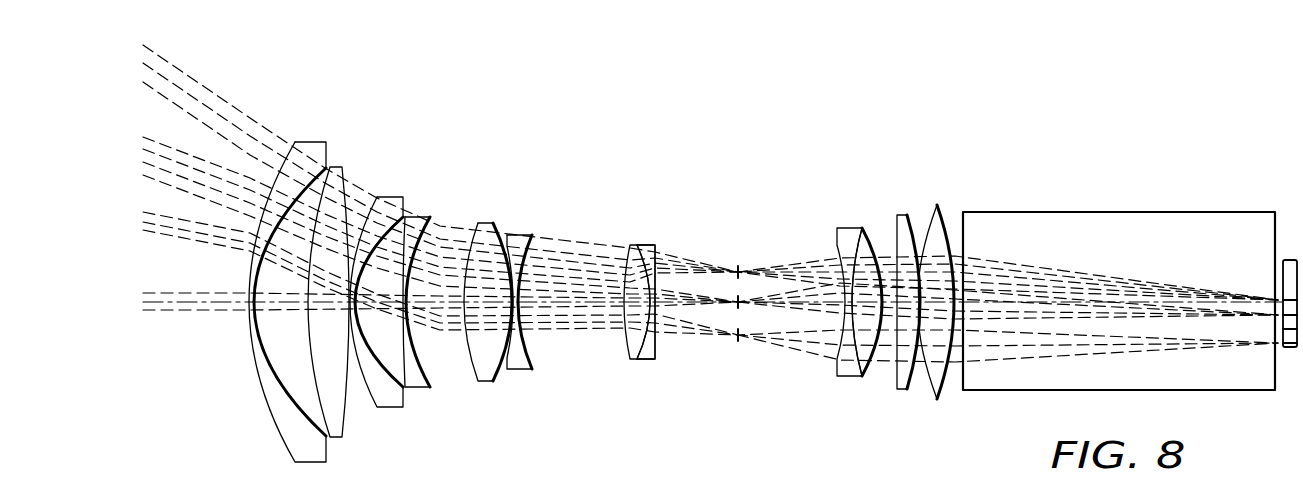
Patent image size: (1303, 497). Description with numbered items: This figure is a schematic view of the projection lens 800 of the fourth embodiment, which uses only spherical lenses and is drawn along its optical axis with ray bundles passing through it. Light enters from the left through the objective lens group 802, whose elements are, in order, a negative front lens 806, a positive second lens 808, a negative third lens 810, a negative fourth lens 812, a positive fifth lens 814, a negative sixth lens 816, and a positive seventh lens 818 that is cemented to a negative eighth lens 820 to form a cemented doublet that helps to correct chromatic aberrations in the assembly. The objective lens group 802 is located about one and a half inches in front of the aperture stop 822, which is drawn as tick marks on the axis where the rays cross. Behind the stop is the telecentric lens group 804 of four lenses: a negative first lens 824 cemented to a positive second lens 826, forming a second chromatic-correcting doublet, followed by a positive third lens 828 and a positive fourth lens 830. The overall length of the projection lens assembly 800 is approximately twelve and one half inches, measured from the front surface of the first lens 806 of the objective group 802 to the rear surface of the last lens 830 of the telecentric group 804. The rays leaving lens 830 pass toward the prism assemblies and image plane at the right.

The projection lens 800 is at (242, 82).
The objective lens group 802 is at (275, 131).
The telecentric lens group 804 is at (834, 191).
The front lens 806 is at (280, 425).
The second lens 808 is at (338, 438).
The third lens 810 is at (390, 408).
The fourth lens 812 is at (417, 390).
The fifth lens 814 is at (486, 381).
The sixth lens 816 is at (525, 370).
The seventh lens 818 is at (632, 360).
The eighth lens 820 is at (651, 360).
The aperture stop 822 is at (738, 345).
The first lens 824 is at (845, 377).
The second lens 826 is at (867, 376).
The third lens 828 is at (905, 389).
The fourth lens 830 is at (941, 399).